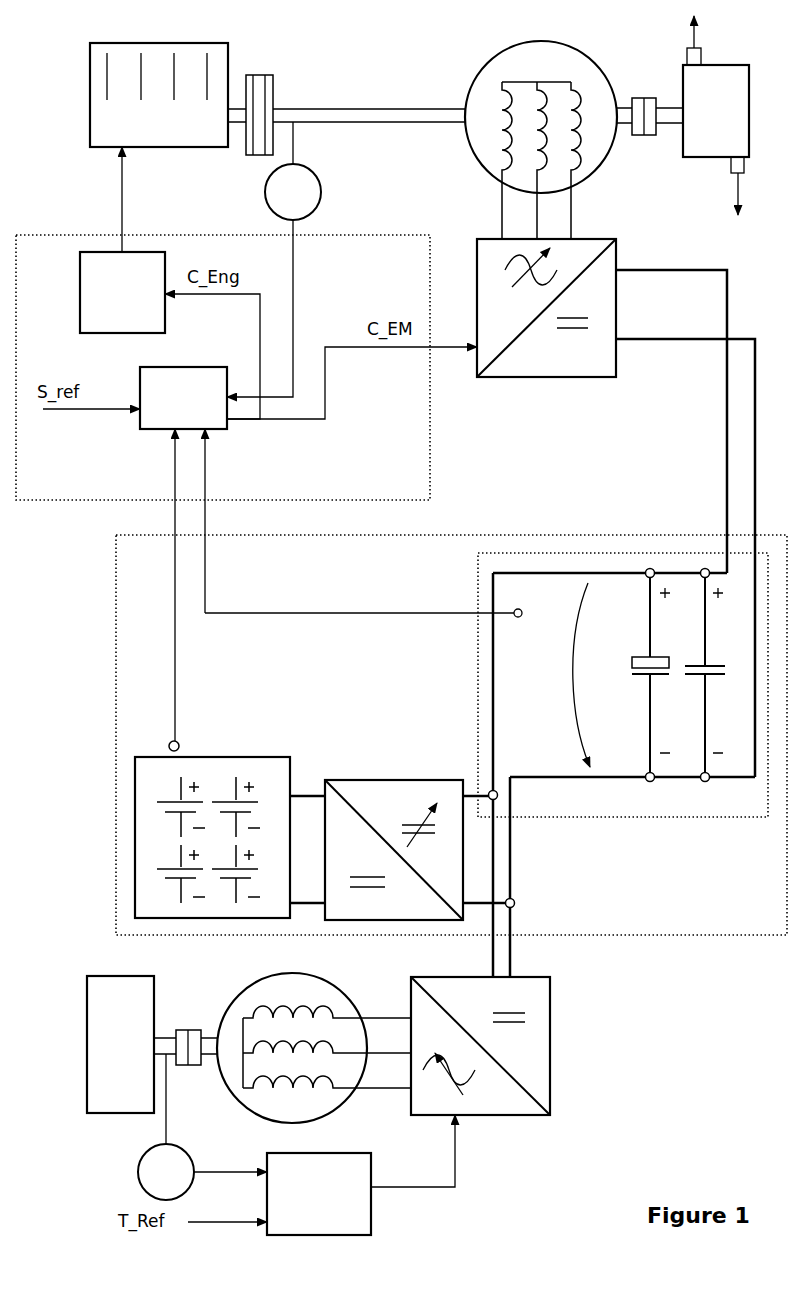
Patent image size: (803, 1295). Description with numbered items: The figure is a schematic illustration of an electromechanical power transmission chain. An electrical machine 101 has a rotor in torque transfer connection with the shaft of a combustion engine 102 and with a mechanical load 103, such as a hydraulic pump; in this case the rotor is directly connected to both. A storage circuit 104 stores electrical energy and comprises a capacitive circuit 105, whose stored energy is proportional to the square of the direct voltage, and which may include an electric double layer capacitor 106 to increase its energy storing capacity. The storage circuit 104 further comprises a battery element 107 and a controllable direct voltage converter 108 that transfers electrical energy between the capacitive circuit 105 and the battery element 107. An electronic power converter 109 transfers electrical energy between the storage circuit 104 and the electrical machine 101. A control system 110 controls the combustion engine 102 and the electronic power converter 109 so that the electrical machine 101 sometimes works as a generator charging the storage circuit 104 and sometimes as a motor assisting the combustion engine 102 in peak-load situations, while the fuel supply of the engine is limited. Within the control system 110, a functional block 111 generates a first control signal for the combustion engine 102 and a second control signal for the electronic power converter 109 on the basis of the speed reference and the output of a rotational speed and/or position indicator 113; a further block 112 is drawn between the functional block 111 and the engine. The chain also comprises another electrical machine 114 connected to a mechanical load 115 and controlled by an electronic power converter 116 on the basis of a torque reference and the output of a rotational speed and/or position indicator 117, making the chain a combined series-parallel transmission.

The electrical machine 101 is at (470, 88).
The combustion engine 102 is at (159, 147).
The mechanical load 103 is at (716, 115).
The storage circuit 104 is at (503, 535).
The capacitive circuit 105 is at (658, 817).
The electric double layer capacitor 106 is at (632, 662).
The battery element 107 is at (217, 757).
The controllable direct voltage converter 108 is at (350, 780).
The electronic power converter 109 is at (595, 239).
The control system 110 is at (430, 480).
The functional block 111 is at (200, 398).
The engine control unit 112 is at (122, 292).
The rotational speed and/or position indicator 113 is at (274, 259).
The electrical machine 114 is at (320, 973).
The mechanical load 115 is at (120, 1044).
The electronic power converter 116 is at (495, 1115).
The rotational speed and/or position indicator 117 is at (202, 1127).